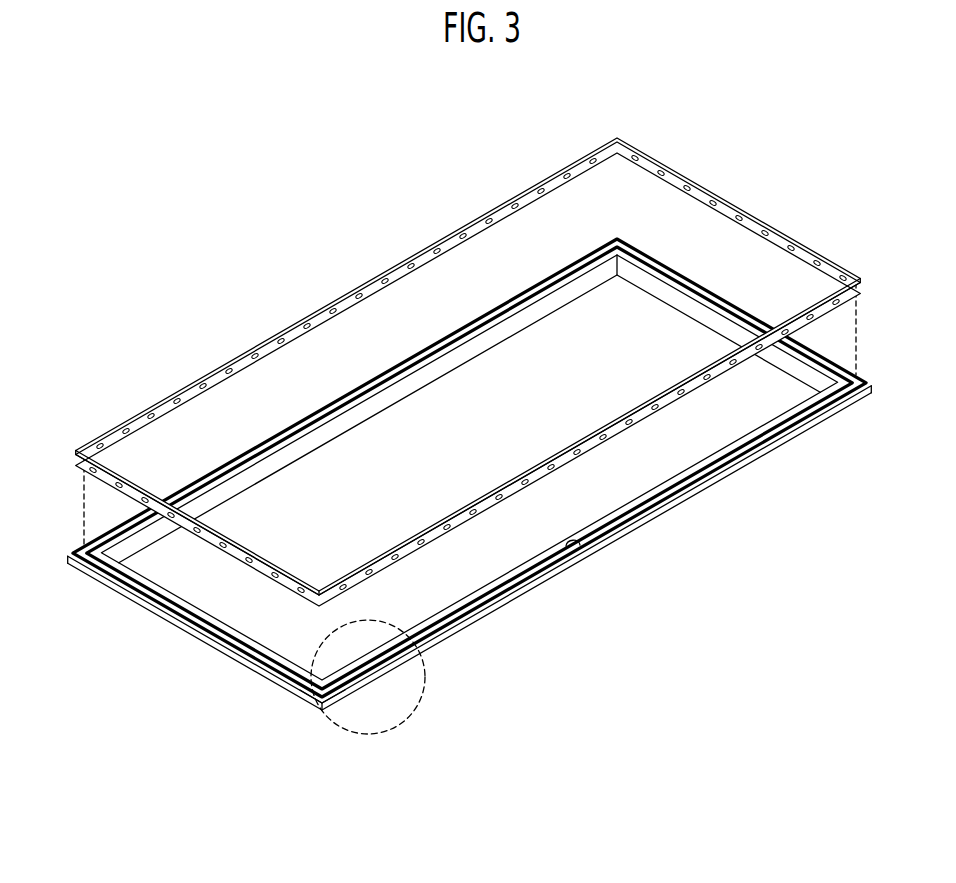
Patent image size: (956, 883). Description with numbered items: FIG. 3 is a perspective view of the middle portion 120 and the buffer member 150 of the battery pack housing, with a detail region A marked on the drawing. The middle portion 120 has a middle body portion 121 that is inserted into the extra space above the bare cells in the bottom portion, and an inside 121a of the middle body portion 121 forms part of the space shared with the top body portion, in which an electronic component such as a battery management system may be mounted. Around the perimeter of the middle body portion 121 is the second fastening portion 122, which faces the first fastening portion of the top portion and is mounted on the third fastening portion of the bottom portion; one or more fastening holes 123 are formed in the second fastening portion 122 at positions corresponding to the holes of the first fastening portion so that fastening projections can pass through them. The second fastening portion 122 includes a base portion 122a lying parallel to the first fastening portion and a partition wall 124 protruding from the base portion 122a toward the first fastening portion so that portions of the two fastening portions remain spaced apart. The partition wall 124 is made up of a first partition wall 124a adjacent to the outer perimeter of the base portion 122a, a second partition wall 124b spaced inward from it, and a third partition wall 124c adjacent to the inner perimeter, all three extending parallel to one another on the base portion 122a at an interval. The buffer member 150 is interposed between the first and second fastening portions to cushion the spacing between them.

The middle portion 120 is at (470, 498).
The middle body portion 121 is at (682, 453).
The inside of the middle body portion 121a is at (600, 477).
The second fastening portion 122 is at (704, 615).
The base portion 122a is at (633, 533).
The fastening holes 123 is at (311, 700).
The partition wall 124 is at (631, 623).
The first partition wall 124a is at (543, 585).
The second partition wall 124b is at (563, 573).
The third partition wall 124c is at (590, 558).
The buffer member 150 is at (742, 208).
The detail region A is at (427, 673).